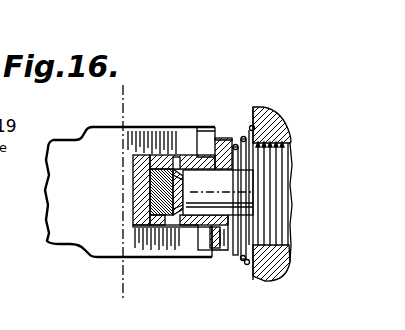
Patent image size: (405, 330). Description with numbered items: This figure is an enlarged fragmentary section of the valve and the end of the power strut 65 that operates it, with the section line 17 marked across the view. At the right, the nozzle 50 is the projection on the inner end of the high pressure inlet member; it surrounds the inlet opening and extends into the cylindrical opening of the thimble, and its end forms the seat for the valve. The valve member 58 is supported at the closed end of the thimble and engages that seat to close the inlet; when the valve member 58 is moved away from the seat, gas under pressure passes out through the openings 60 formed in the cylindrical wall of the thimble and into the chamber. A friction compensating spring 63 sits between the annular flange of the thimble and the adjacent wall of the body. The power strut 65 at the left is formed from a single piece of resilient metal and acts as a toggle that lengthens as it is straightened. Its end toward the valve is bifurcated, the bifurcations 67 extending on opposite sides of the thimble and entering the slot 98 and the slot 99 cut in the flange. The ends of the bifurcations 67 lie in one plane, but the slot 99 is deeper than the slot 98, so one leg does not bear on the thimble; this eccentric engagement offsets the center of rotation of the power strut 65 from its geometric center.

The section line 17- 17 is at (146, 290).
The nozzle 50 is at (292, 153).
The valve member 58 is at (163, 226).
The openings 60 is at (178, 163).
The friction compensating spring 63 is at (250, 128).
The power strut 65 is at (68, 244).
The bifurcations 67 is at (187, 128).
The slot 98 is at (213, 143).
The slot 99 is at (217, 240).